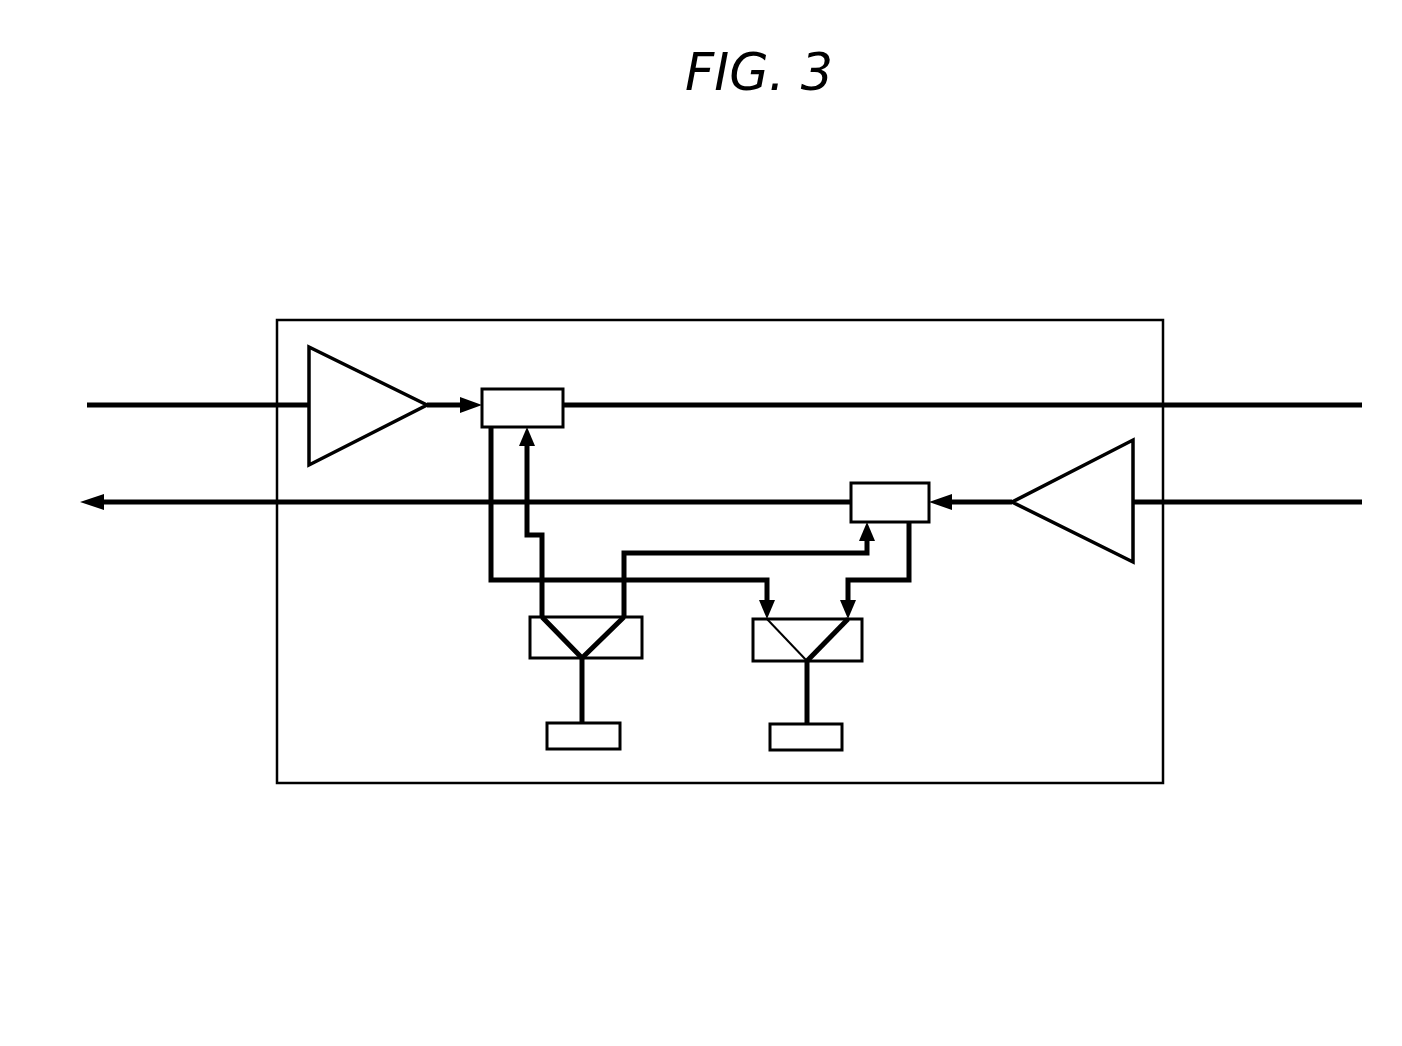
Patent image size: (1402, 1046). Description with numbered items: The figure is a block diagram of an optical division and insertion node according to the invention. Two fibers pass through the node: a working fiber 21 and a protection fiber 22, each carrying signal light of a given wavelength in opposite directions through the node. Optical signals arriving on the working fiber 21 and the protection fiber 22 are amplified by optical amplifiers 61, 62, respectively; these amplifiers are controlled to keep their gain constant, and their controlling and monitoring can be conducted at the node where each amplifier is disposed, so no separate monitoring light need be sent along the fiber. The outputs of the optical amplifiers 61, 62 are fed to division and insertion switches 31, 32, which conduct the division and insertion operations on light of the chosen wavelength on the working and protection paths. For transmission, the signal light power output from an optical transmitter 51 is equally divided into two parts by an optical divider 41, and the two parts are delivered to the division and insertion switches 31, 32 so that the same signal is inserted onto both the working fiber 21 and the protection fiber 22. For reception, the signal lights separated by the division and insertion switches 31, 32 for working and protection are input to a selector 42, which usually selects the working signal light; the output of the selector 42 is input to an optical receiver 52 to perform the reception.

The working fiber 21 is at (1262, 508).
The protection fiber 22 is at (178, 404).
The division and insertion switch 31 is at (908, 483).
The division and insertion switch 32 is at (560, 389).
The optical divider 41 is at (533, 656).
The selector 42 is at (853, 648).
The optical transmitter 51 is at (568, 743).
The optical receiver 52 is at (828, 743).
The optical amplifier 61 is at (1072, 520).
The optical amplifier 62 is at (333, 365).